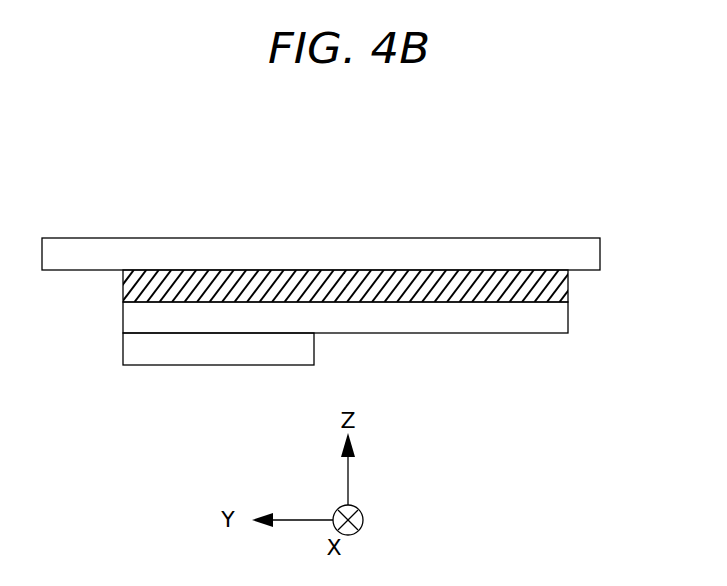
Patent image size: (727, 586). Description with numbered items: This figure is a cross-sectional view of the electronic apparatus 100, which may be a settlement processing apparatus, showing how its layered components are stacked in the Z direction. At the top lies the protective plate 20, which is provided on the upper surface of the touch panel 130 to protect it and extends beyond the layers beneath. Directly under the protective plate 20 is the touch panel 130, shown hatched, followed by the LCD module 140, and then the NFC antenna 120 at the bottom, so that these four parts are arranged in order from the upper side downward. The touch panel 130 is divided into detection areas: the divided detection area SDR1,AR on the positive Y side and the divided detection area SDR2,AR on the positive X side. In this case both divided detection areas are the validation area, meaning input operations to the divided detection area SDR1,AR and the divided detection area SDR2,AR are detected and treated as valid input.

The electronic apparatus 100 is at (318, 157).
The protective plate 20 is at (601, 257).
The touch panel 130 is at (569, 297).
The LCD module 140 is at (569, 325).
The NFC antenna 120 is at (315, 363).
The divided detection area SDR1 as validation area AR SDR1,AR is at (197, 283).
The divided detection area SDR2 as validation area AR SDR2,AR is at (476, 284).